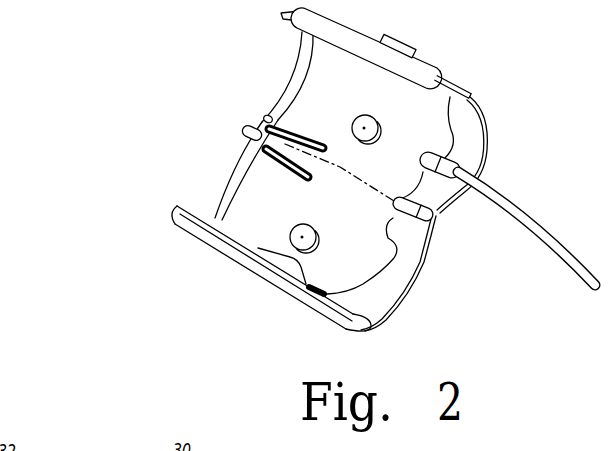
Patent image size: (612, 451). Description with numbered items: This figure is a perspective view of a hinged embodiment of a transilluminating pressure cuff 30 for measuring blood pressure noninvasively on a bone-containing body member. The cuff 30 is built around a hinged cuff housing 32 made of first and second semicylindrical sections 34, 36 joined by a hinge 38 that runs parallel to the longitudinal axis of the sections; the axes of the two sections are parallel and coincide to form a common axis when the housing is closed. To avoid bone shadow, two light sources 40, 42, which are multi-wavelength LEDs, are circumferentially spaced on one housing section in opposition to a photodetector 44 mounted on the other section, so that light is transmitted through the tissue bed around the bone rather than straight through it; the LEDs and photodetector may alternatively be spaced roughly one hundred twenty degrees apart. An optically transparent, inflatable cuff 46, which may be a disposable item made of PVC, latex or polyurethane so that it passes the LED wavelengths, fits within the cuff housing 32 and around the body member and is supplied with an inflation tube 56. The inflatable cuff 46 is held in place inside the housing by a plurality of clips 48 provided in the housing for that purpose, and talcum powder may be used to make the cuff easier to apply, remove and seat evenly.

The cuff 30 is at (486, 50).
The hinged cuff housing 32 is at (172, 243).
The first semicylindrical section 34 is at (294, 64).
The second semicylindrical section 36 is at (232, 201).
The hinge 38 is at (246, 140).
The light source 40 is at (401, 44).
The light source 42 is at (352, 127).
The photodetector 44 is at (303, 237).
The inflatable cuff 46 is at (420, 118).
The clips 48 is at (265, 116).
The inflation tube 56 is at (525, 208).